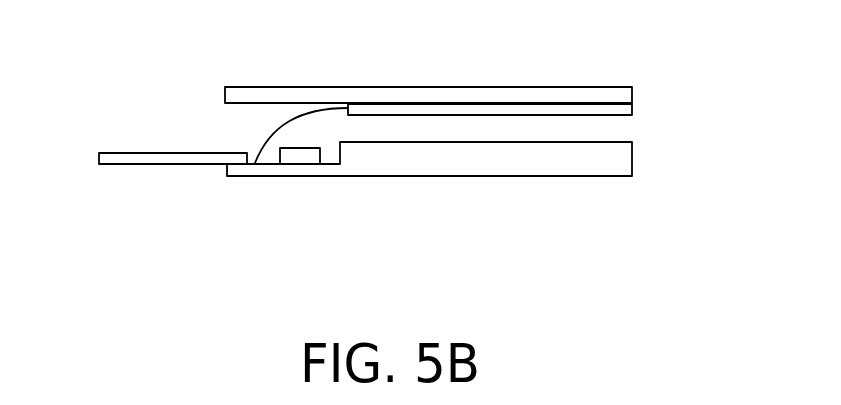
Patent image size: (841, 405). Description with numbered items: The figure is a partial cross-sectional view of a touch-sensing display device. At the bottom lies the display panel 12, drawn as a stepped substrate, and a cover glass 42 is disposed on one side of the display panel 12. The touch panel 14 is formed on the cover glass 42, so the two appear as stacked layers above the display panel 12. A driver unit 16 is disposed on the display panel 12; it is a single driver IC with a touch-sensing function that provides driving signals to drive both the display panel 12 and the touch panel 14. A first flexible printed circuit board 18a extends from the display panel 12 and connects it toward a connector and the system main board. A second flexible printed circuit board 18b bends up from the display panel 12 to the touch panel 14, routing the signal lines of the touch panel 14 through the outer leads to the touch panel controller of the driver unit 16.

The display panel 12 is at (530, 163).
The touch panel 14 is at (630, 110).
The driver unit 16 is at (297, 155).
The first flexible printed circuit board 18a is at (127, 158).
The second flexible printed circuit board 18b is at (268, 145).
The cover glass 42 is at (402, 95).